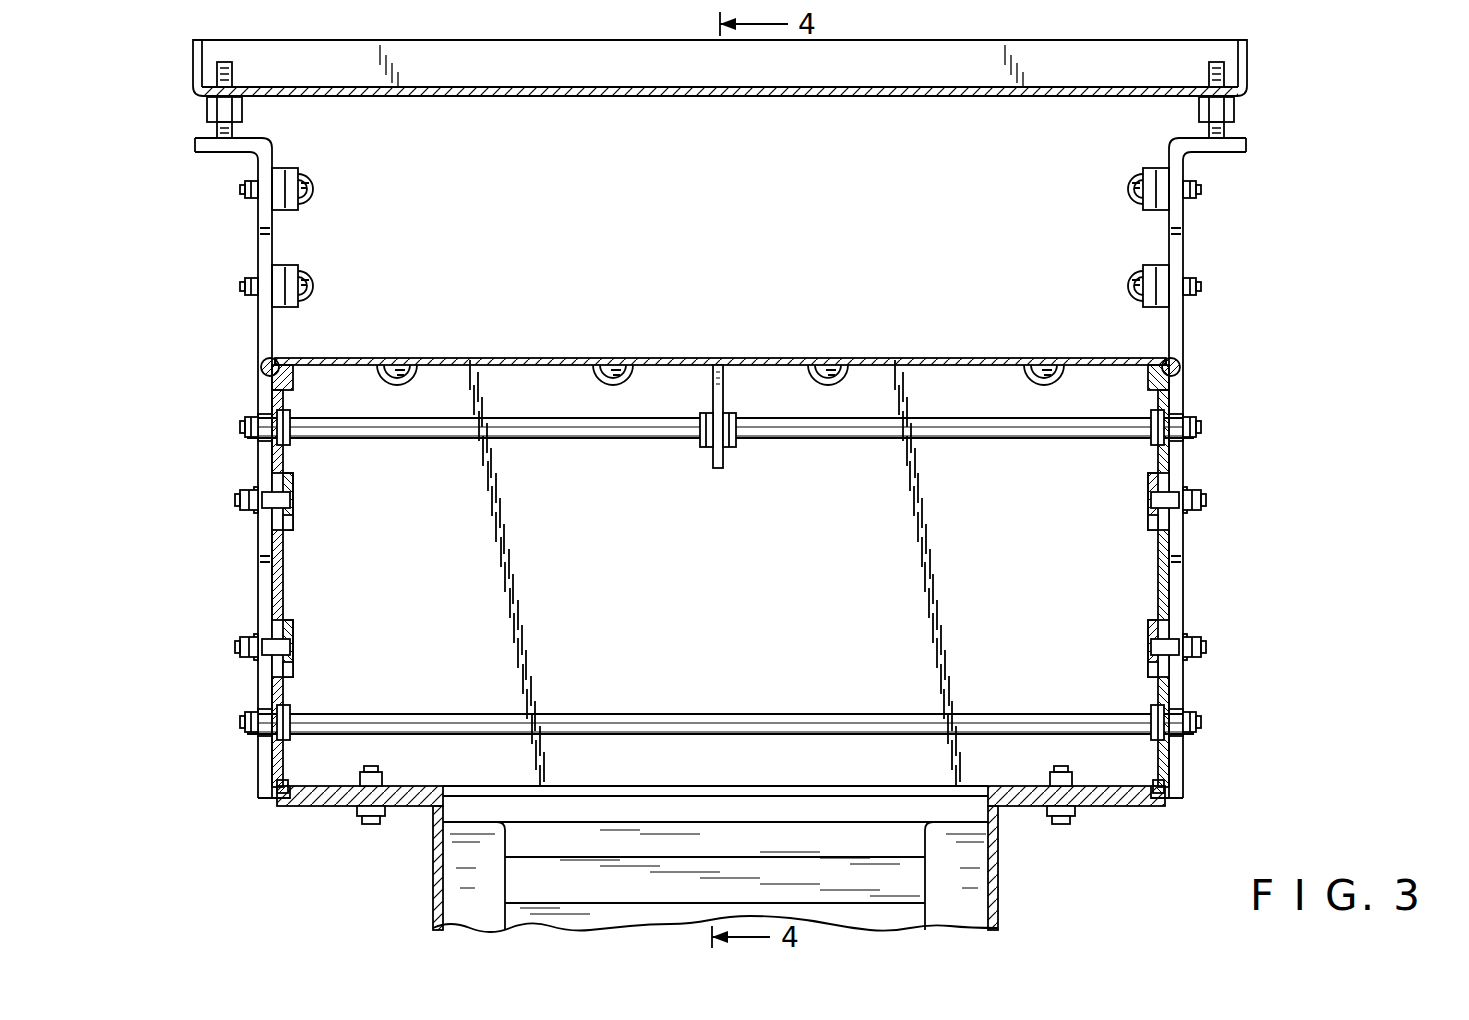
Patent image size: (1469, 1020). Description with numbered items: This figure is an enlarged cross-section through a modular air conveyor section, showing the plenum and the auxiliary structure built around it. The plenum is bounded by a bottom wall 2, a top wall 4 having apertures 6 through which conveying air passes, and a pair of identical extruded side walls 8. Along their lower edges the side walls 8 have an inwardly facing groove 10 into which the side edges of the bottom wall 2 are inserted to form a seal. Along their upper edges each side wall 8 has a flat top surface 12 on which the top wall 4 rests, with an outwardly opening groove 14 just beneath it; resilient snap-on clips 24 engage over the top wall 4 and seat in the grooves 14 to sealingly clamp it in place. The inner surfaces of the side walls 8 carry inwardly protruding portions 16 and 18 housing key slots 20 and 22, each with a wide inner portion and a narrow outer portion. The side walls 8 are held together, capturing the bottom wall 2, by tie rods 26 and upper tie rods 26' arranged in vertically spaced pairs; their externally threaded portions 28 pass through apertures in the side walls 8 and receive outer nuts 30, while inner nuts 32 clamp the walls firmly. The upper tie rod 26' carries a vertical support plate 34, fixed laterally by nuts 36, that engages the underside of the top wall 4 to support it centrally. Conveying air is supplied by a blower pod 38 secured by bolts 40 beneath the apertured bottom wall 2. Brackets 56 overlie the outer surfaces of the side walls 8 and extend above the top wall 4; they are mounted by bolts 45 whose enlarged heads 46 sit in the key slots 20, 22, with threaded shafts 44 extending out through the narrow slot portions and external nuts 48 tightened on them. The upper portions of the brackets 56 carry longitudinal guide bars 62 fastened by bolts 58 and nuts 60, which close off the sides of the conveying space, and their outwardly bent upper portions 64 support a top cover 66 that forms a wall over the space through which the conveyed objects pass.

The bottom wall 2 is at (1090, 792).
The top wall 4 is at (955, 366).
The apertures 6 is at (1052, 358).
The side walls 8 is at (280, 565).
The inwardly facing groove 10 is at (288, 798).
The flat top surface 12 is at (280, 357).
The outwardly opening groove 14 is at (283, 380).
The inwardly protruding portion 16 is at (290, 497).
The inwardly protruding portion 18 is at (290, 645).
The key slot 20 is at (288, 522).
The key slot 22 is at (288, 668).
The snap-on clips 24 is at (263, 363).
The tie rods 26 is at (720, 694).
The upper tie rods 26' is at (720, 454).
The externally threaded portions 28 is at (251, 422).
The nuts 30 is at (287, 412).
The nuts 32 is at (262, 416).
The vertical support plate 34 is at (724, 467).
The nuts 36 is at (712, 406).
The blower pods 38 is at (1000, 897).
The bolts 40 is at (372, 826).
The externally threaded shafts 44 is at (245, 510).
The bolts 45 is at (236, 500).
The enlarged heads 46 is at (285, 478).
The external nuts 48 is at (255, 512).
The brackets 56 is at (258, 578).
The bolts 58 is at (245, 190).
The nuts 60 is at (250, 172).
The guide bars 62 is at (290, 265).
The outwardly bent upper portions 64 is at (195, 145).
The top cover 66 is at (890, 90).